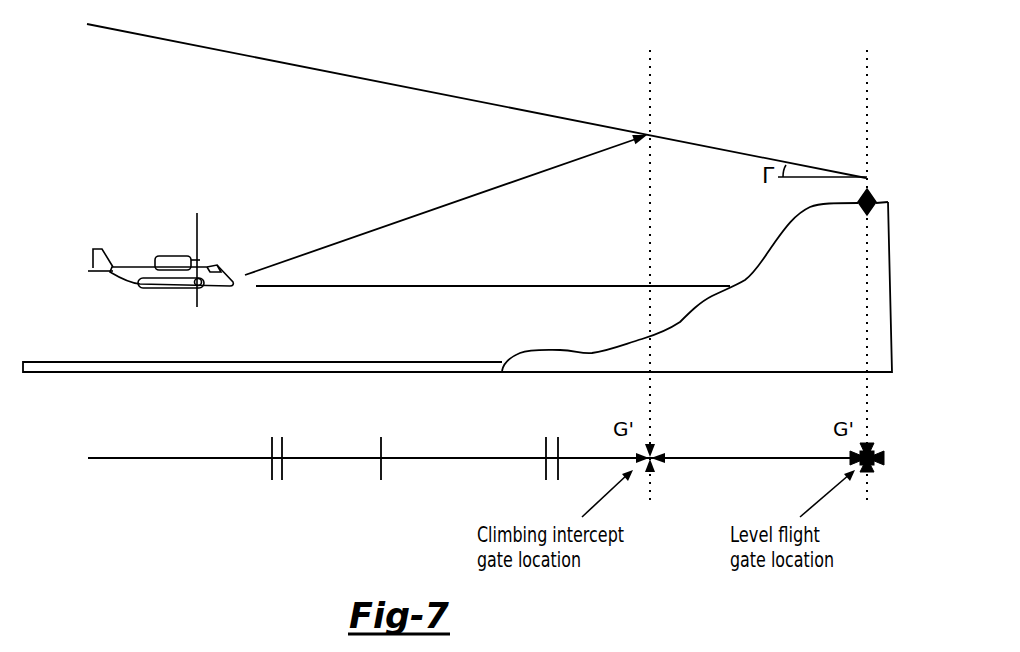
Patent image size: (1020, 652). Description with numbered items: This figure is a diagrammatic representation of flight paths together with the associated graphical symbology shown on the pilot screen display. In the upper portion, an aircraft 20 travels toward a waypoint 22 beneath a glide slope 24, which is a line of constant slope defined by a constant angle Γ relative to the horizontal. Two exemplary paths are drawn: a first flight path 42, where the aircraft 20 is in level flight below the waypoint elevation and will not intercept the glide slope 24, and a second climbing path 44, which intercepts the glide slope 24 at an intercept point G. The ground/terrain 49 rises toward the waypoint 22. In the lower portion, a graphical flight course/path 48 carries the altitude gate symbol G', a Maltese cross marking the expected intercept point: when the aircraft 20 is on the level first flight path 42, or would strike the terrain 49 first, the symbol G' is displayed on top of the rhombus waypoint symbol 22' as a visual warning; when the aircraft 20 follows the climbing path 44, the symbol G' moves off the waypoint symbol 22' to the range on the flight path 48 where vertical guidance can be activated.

The aircraft 20 is at (137, 268).
The waypoint 22 is at (881, 159).
The waypoint symbol 22' is at (884, 483).
The glide slope 24 is at (484, 101).
The first flight path 42 is at (368, 287).
The second climbing path 44 is at (372, 232).
The graphical flight course/path 48 is at (158, 460).
The ground/terrain 49 is at (767, 256).